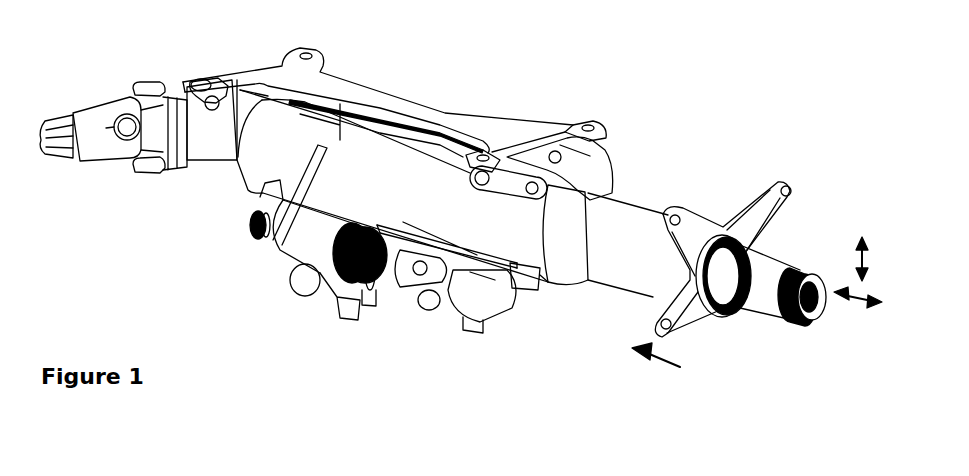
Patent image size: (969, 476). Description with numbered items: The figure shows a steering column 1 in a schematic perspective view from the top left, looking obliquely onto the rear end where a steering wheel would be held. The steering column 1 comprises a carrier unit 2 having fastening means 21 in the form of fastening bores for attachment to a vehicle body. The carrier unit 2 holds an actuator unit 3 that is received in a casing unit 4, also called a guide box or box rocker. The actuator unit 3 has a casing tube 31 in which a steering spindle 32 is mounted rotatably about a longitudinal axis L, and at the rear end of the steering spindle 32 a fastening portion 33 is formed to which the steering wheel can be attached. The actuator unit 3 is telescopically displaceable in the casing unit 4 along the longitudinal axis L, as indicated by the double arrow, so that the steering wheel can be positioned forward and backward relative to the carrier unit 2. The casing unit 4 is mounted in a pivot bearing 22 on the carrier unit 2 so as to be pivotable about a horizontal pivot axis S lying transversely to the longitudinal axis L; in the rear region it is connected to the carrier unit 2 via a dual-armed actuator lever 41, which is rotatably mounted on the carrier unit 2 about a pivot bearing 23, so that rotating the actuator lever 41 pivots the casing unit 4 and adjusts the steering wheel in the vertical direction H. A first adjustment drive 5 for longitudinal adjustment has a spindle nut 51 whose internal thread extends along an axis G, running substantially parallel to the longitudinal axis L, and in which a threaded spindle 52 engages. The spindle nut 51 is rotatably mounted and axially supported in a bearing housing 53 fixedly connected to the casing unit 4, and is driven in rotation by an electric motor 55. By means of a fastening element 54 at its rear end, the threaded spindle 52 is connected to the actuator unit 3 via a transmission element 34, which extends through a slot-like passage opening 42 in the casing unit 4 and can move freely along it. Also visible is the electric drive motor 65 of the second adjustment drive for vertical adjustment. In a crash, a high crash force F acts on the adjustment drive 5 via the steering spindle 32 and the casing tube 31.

The steering column 1 is at (511, 52).
The carrier unit 2 is at (412, 112).
The actuator unit 3 is at (689, 190).
The casing unit 4 is at (243, 172).
The first adjustment drive 5 is at (275, 308).
The fastening means 21 is at (307, 50).
The pivot bearing 22 is at (213, 96).
The pivot bearing 23 is at (486, 164).
The casing tube 31 is at (615, 217).
The steering spindle 32 is at (766, 268).
The fastening portion 33 is at (791, 318).
The transmission element 34 is at (470, 292).
The actuator lever 41 is at (577, 153).
The passage opening 42 is at (523, 280).
The spindle nut 51 is at (333, 276).
The threaded spindle 52 is at (367, 280).
The bearing housing 53 is at (300, 240).
The fastening element 54 is at (411, 282).
The electric motor 55 is at (388, 292).
The electric drive motor 65 is at (466, 327).
The threaded spindle axis G is at (253, 230).
The pivot axis S is at (371, 67).
The vertical direction H is at (860, 257).
The longitudinal axis L is at (870, 310).
The crash force F is at (668, 366).